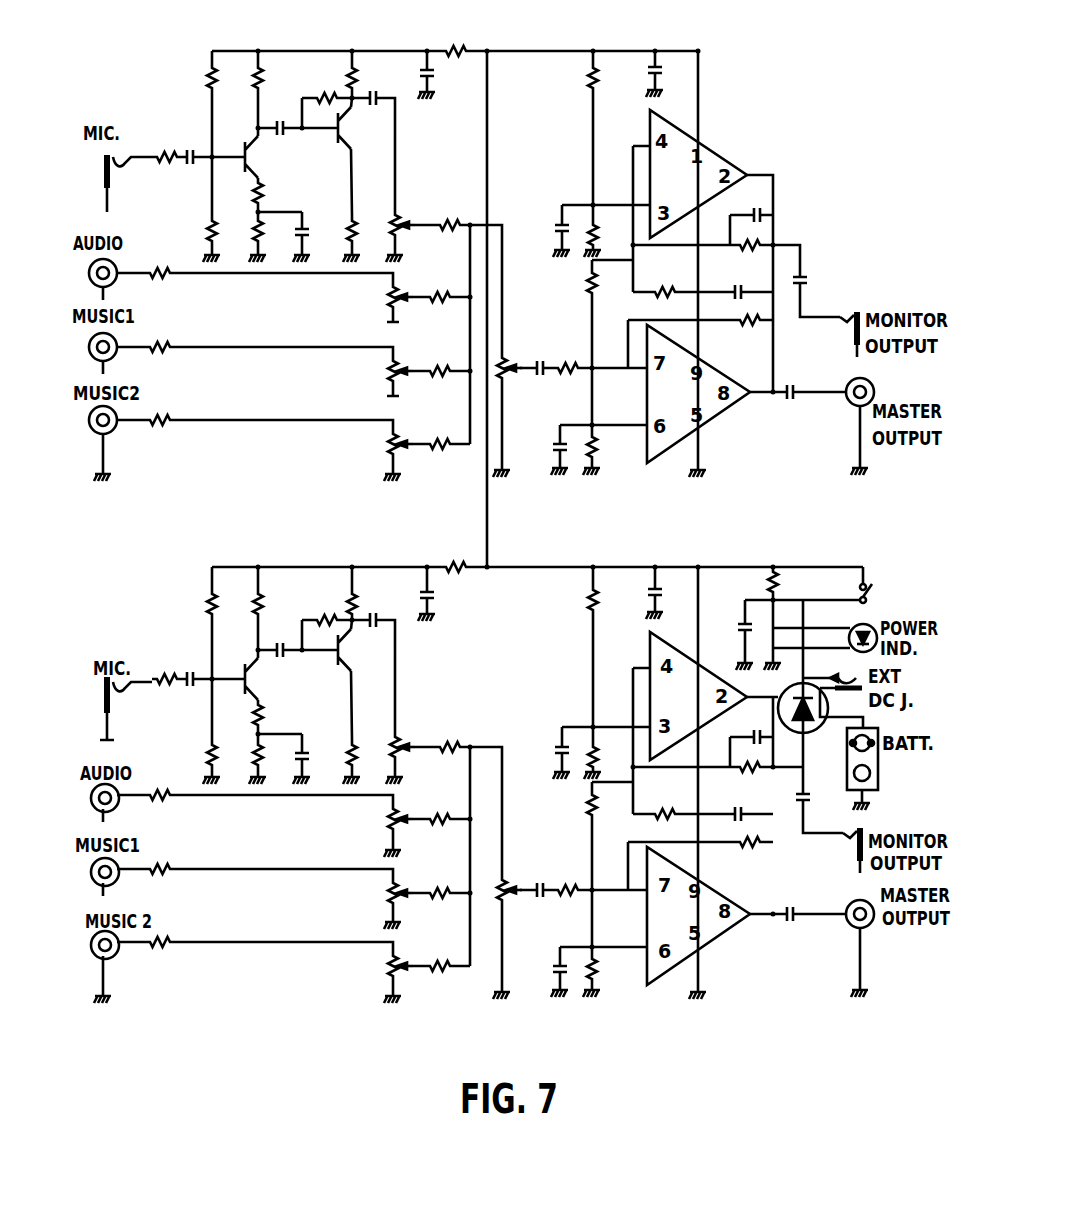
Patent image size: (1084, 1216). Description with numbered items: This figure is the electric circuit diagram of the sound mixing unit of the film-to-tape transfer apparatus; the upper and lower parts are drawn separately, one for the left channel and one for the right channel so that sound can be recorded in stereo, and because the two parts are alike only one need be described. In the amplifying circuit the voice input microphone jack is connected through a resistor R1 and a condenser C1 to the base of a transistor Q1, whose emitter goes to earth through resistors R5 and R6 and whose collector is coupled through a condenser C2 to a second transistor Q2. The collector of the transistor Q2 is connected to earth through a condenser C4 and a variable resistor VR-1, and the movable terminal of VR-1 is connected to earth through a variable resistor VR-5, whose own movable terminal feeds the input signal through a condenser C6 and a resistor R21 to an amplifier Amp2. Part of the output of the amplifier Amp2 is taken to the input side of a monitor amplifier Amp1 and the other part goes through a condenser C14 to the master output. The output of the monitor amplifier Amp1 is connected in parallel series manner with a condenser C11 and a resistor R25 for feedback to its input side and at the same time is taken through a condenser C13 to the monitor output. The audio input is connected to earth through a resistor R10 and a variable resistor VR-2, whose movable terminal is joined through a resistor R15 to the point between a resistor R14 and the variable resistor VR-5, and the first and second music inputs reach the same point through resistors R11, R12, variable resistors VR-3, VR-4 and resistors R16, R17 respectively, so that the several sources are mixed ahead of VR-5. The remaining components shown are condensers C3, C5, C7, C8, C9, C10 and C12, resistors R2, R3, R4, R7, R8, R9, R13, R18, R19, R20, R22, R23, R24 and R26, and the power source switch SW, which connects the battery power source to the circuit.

The resistor R1 is at (167, 404).
The resistor R2 is at (196, 341).
The resistor R3 is at (197, 493).
The resistor R4 is at (274, 341).
The resistor R5 is at (273, 454).
The resistor R6 is at (258, 495).
The resistor R7 is at (327, 349).
The resistor R8 is at (366, 341).
The resistor R9 is at (366, 493).
The resistor R10 is at (163, 552).
The resistor R11 is at (166, 624).
The resistor R12 is at (166, 698).
The resistor R13 is at (456, 296).
The resistor R14 is at (449, 501).
The resistor R15 is at (445, 574).
The resistor R16 is at (445, 646).
The resistor R17 is at (446, 720).
The resistor R18 is at (594, 339).
The resistor R19 is at (612, 496).
The resistor R20 is at (571, 550).
The resistor R21 is at (573, 645).
The resistor R22 is at (611, 708).
The resistor R23 is at (670, 540).
The resistor R24 is at (791, 582).
The resistor R25 is at (755, 518).
The resistor R26 is at (748, 594).
The condenser C1 is at (194, 433).
The condenser C2 is at (291, 401).
The condenser C3 is at (300, 495).
The condenser C4 is at (369, 373).
The condenser C5 is at (443, 340).
The condenser C6 is at (535, 644).
The condenser C7 is at (548, 491).
The condenser C8 is at (544, 709).
The condenser C9 is at (672, 338).
The condenser C10 is at (727, 630).
The condenser C11 is at (751, 466).
The condenser C12 is at (724, 562).
The condenser C13 is at (818, 544).
The condenser C14 is at (795, 665).
The variable resistor VR-1 is at (416, 478).
The variable resistor VR-2 is at (415, 551).
The variable resistor VR-3 is at (414, 625).
The variable resistor VR-4 is at (415, 697).
The variable resistor VR-5 is at (527, 617).
The transistor Q1 is at (277, 686).
The transistor Q2 is at (359, 676).
The monitor amplifier Amp1 is at (698, 435).
The amplifier Amp2 is at (698, 655).
The power source switch SW is at (881, 586).